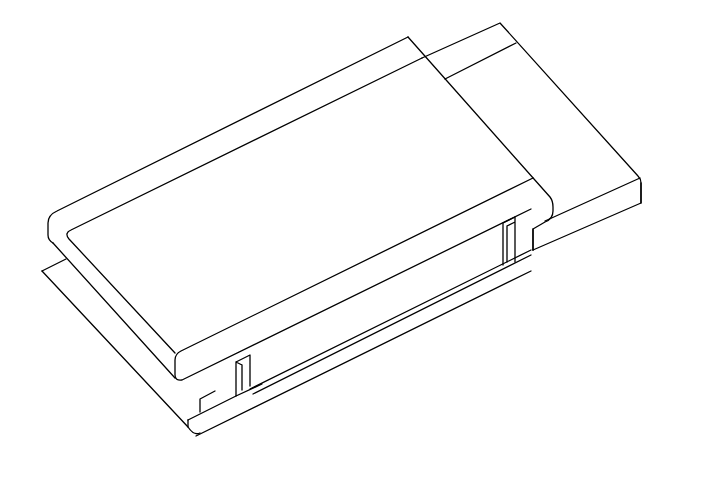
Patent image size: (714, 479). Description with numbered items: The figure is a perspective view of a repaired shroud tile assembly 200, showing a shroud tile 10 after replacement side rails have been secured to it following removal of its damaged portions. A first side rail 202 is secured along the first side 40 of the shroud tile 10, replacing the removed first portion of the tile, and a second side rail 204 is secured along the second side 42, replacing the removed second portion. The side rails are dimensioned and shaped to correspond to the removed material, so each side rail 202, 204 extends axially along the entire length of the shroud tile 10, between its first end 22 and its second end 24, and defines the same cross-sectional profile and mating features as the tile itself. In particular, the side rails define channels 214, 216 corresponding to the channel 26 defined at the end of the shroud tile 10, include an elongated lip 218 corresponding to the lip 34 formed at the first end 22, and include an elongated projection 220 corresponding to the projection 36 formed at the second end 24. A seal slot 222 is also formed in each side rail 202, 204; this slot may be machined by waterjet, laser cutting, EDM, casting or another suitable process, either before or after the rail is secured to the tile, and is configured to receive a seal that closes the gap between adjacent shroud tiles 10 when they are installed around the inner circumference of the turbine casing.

The shroud tile 10 is at (322, 208).
The first end 22 is at (57, 291).
The second end 24 is at (541, 63).
The channel 26 is at (122, 348).
The lip 34 is at (87, 325).
The projection 36 is at (577, 137).
The first side 40 is at (450, 216).
The second side 42 is at (345, 95).
The repaired shroud tile assembly 200 is at (181, 91).
The first side rail 202 is at (298, 342).
The second side rail 204 is at (152, 160).
The channel 214 is at (206, 400).
The channel 216 is at (541, 233).
The elongated lip 218 is at (182, 418).
The elongated projection 220 is at (619, 208).
The seal slot 222 is at (476, 284).